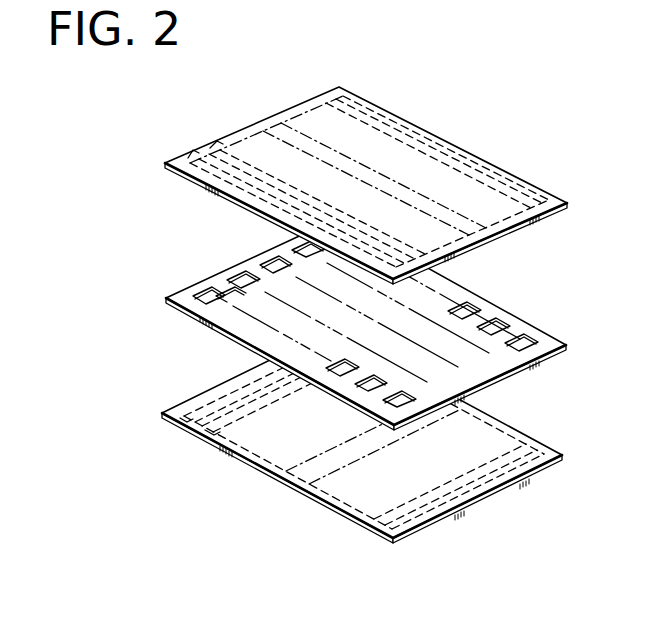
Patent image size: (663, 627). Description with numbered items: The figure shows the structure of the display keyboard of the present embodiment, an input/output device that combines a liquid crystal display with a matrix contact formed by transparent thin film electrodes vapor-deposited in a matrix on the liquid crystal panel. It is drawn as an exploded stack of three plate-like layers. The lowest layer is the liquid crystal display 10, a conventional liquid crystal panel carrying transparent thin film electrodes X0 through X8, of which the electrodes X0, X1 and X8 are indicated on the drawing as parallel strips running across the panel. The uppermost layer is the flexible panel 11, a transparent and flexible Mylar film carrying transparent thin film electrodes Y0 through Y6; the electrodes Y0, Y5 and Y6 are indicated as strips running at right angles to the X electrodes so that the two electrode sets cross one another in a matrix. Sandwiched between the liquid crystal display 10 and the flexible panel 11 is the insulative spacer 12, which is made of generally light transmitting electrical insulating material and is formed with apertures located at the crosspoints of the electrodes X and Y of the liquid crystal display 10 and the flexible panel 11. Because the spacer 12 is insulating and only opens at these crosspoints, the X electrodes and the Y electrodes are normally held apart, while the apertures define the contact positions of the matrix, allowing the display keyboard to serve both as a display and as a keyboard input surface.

The liquid crystal display 10 is at (368, 459).
The flexible panel 11 is at (364, 178).
The insulative spacer 12 is at (552, 340).
The transparent thin film electrode X0 is at (183, 428).
The transparent thin film electrode X1 is at (217, 437).
The transparent thin film electrode X8 is at (375, 515).
The transparent thin film electrode Y0 is at (333, 90).
The transparent thin film electrode Y5 is at (217, 140).
The transparent thin film electrode Y6 is at (193, 148).